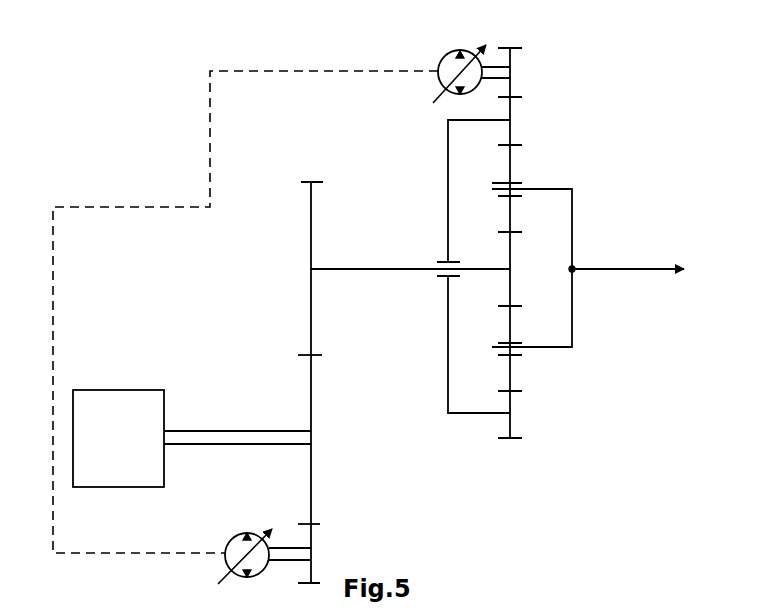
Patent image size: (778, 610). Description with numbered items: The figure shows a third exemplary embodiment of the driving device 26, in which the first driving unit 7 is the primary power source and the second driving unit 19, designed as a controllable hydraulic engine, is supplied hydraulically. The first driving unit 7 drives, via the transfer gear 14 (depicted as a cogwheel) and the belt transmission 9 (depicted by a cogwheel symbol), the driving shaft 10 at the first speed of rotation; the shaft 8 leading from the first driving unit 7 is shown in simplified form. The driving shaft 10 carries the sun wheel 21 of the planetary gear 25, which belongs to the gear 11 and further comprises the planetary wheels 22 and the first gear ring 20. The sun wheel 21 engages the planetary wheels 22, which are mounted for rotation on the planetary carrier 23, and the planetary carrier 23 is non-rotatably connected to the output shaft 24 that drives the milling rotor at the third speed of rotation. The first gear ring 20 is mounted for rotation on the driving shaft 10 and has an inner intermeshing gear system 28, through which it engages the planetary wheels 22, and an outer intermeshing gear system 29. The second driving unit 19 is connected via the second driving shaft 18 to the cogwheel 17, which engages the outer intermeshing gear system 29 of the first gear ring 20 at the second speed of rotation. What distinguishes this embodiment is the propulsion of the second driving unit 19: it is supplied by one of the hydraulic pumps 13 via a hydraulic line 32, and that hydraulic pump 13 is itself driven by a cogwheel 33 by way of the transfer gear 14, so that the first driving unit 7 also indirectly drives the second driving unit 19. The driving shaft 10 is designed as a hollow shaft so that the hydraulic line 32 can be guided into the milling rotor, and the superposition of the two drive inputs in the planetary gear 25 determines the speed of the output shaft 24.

The first driving unit 7 is at (119, 473).
The input shaft 8 is at (225, 440).
The belt transmission 9 is at (296, 311).
The driving shaft 10 is at (392, 272).
The gear 11 is at (605, 465).
The hydraulic pump 13 is at (240, 540).
The transfer gear 14 is at (312, 483).
The cogwheel 17 is at (520, 85).
The second driving shaft 18 is at (486, 65).
The second driving unit 19 is at (445, 82).
The first gear ring 20 is at (482, 414).
The sun wheel 21 is at (512, 294).
The planetary wheels 22 is at (512, 173).
The planetary carrier 23 is at (572, 208).
The output shaft 24 is at (652, 272).
The planetary gear 25 is at (622, 383).
The driving device 26 is at (127, 119).
The inner intermeshing gear system 28 is at (513, 396).
The outer intermeshing gear system 29 is at (515, 446).
The hydraulic line 32 is at (212, 158).
The cogwheel 33 is at (312, 541).